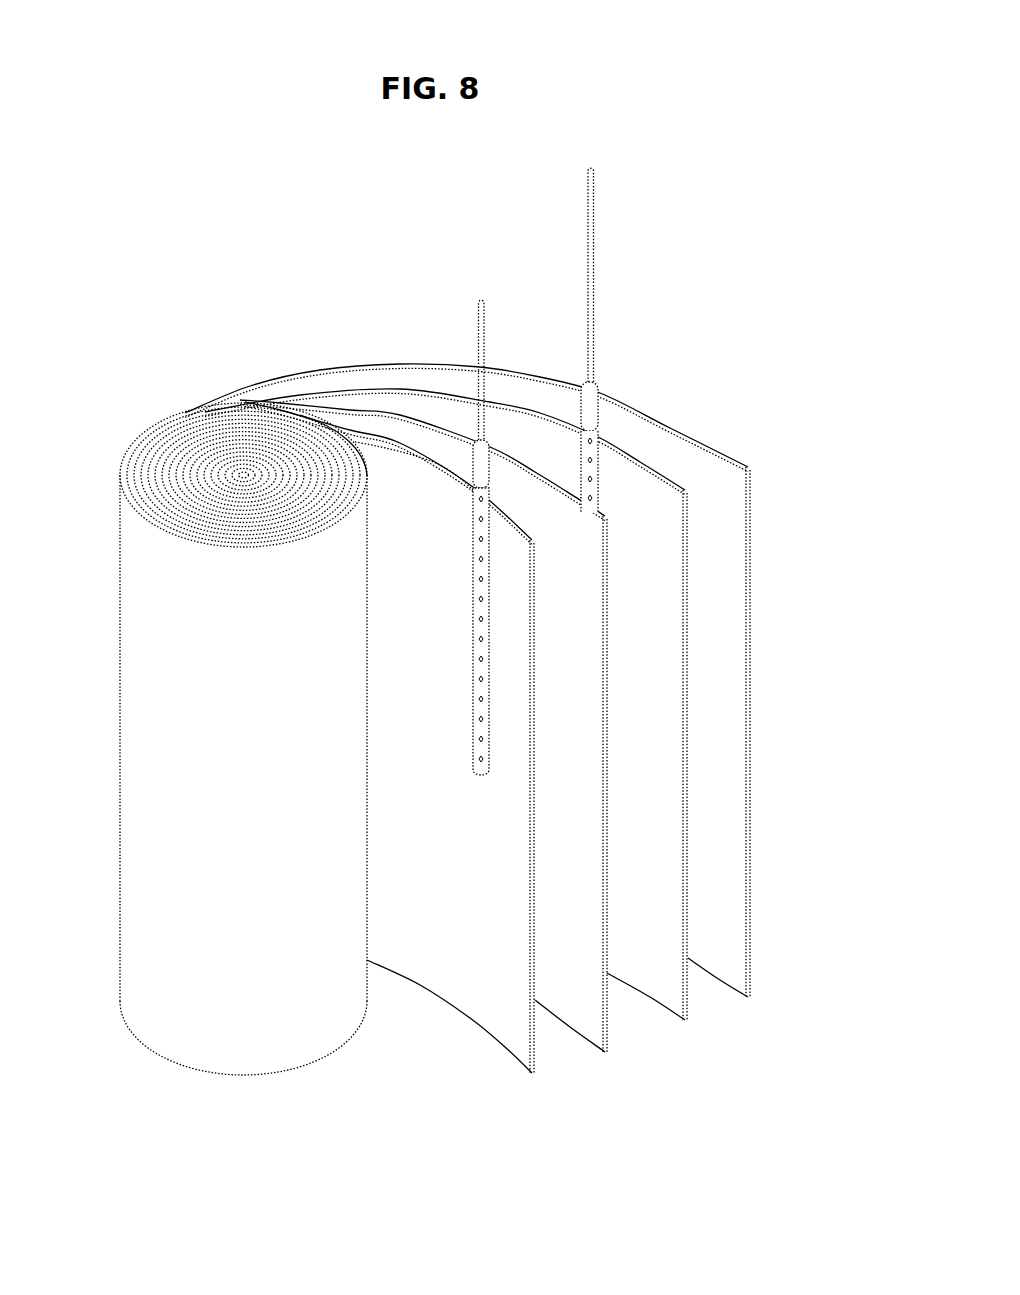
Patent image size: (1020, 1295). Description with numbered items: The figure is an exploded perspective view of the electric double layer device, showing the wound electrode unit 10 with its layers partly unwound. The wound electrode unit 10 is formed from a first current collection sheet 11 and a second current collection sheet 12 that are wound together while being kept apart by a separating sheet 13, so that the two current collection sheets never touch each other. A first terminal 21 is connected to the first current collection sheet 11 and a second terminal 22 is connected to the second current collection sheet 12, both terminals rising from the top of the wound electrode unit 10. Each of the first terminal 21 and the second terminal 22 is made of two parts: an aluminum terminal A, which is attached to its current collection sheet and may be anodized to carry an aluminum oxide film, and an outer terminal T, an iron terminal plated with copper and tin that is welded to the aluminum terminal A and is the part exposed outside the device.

The wound electrode unit 10 is at (255, 733).
The first current collection sheet 11 is at (637, 480).
The second current collection sheet 12 is at (386, 465).
The separating sheet 13 is at (590, 998).
The first terminal 21 is at (598, 306).
The second terminal 22 is at (488, 343).
The outer terminal T is at (487, 302).
The aluminum terminal A is at (598, 497).